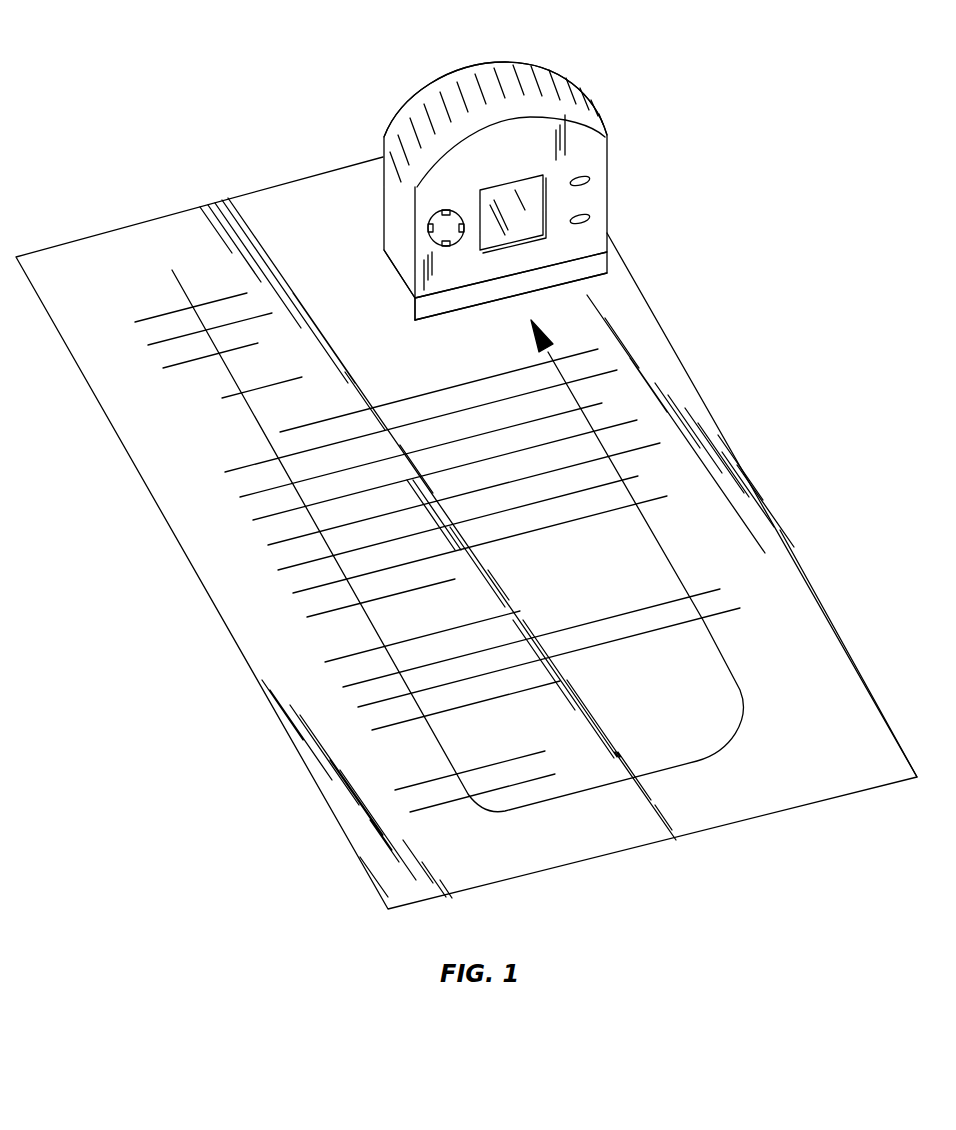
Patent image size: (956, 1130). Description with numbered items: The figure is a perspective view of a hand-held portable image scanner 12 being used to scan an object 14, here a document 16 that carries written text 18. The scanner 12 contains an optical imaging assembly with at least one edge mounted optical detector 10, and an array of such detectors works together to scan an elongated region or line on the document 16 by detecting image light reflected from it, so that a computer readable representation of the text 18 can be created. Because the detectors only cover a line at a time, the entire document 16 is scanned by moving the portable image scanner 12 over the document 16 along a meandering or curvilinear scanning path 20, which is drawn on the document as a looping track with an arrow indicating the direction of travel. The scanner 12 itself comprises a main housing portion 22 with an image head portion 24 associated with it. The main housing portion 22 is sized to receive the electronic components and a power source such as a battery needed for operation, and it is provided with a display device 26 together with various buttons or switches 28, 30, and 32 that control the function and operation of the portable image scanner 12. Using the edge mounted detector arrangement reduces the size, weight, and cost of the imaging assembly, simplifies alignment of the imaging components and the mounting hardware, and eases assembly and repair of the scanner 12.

The edge mounted optical detector 10 is at (411, 296).
The portable image scanner 12 is at (531, 62).
The object 14 is at (683, 333).
The document 16 is at (778, 533).
The written text 18 is at (540, 532).
The scanning path 20 is at (742, 652).
The main housing portion 22 is at (605, 133).
The image head portion 24 is at (608, 270).
The display device 26 is at (470, 198).
The button or switch 28 is at (428, 240).
The button or switch 30 is at (600, 181).
The button or switch 32 is at (600, 219).